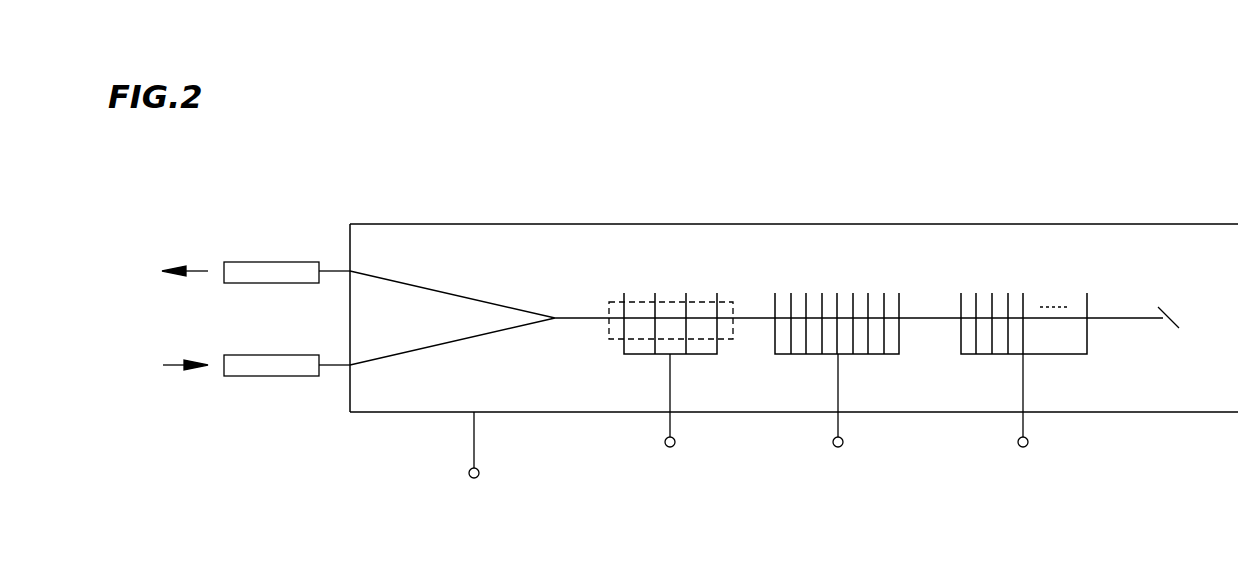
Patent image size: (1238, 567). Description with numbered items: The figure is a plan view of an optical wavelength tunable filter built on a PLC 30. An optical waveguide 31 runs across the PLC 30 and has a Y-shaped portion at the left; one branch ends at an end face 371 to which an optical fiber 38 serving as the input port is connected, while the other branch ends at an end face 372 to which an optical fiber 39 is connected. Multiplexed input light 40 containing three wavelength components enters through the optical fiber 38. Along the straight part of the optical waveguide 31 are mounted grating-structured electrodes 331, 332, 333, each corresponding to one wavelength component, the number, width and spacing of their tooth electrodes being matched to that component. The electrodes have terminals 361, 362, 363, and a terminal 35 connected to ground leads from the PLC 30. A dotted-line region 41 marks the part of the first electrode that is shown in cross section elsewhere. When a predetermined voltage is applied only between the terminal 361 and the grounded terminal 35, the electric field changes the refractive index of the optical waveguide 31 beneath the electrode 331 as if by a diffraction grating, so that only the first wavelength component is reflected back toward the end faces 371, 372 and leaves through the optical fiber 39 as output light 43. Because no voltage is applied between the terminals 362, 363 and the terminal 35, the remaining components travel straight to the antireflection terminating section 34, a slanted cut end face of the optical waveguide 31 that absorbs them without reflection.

The PLC 30 is at (1155, 224).
The optical waveguide 31 is at (455, 295).
The grating-structured electrode 331 is at (624, 354).
The grating-structured electrode 332 is at (815, 355).
The grating-structured electrode 333 is at (986, 355).
The antireflection terminating section 34 is at (1168, 314).
The terminal 35 is at (472, 479).
The terminal 361 is at (669, 448).
The terminal 362 is at (836, 448).
The terminal 363 is at (1021, 448).
The end face 371 is at (350, 365).
The end face 372 is at (350, 271).
The optical fiber 38 is at (255, 376).
The optical fiber 39 is at (266, 262).
The multiplexed input light 40 is at (165, 365).
The dotted-line encircled portion 41 is at (733, 300).
The output light 43 is at (203, 270).